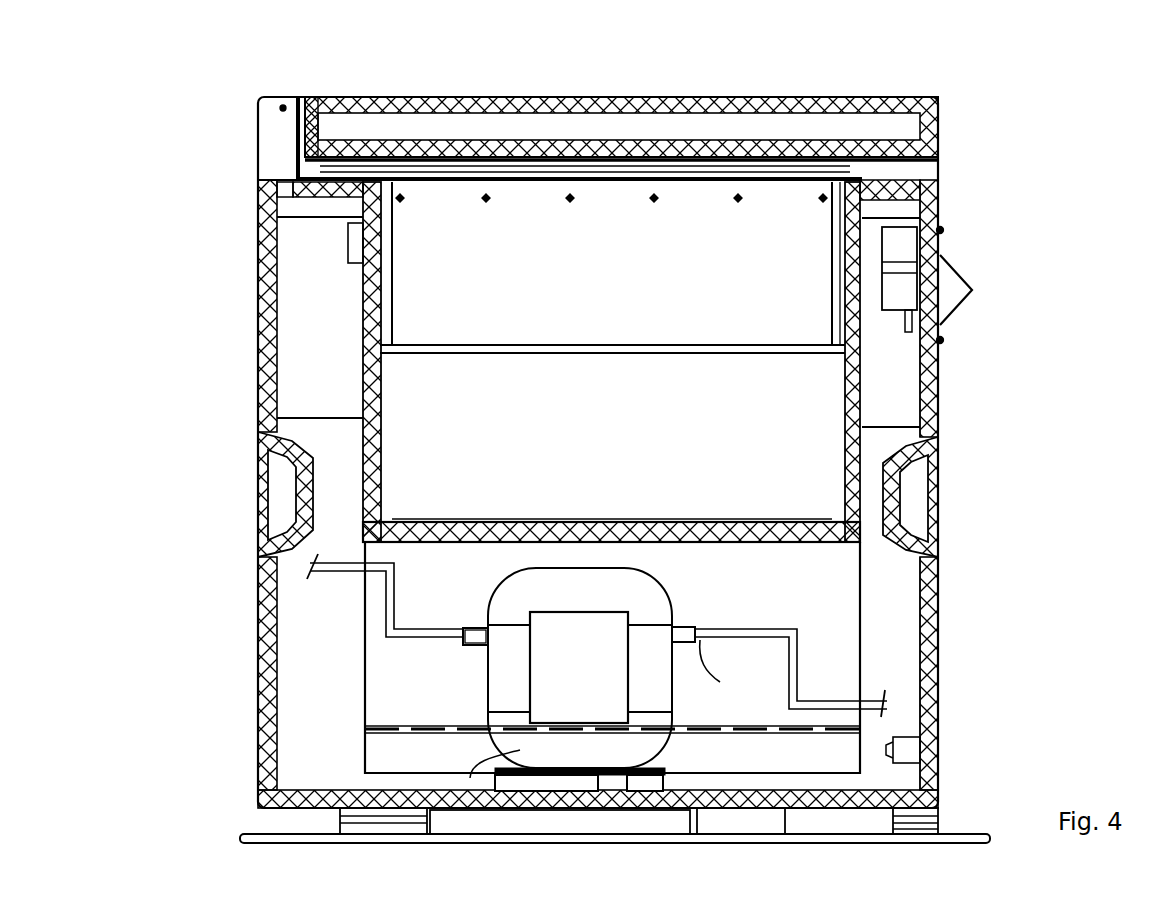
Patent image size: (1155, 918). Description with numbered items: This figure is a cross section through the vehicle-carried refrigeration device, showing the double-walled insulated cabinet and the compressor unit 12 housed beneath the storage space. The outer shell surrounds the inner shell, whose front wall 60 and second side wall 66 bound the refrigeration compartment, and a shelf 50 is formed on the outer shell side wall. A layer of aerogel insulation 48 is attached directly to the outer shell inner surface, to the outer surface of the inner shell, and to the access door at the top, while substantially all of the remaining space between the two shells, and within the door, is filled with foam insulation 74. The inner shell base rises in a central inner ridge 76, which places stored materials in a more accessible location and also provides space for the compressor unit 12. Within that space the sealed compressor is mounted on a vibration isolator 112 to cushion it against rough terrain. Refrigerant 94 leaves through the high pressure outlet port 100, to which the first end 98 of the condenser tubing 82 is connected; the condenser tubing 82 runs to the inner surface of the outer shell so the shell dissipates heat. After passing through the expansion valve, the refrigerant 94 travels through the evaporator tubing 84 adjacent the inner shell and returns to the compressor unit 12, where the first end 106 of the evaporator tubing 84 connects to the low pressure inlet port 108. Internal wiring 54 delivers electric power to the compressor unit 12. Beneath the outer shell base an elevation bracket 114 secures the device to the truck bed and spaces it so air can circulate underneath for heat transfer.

The compressor unit 12 is at (432, 713).
The layer of aerogel insulation 48 is at (768, 145).
The shelf 50 is at (484, 345).
The internal wiring 54 is at (440, 768).
The inner shell front wall 60 is at (845, 440).
The inner shell second side wall 66 is at (625, 342).
The foam insulation 74 is at (640, 128).
The inner ridge 76 is at (492, 522).
The condenser tubing 82 is at (796, 661).
The evaporator tubing 84 is at (375, 600).
The refrigerant 94 is at (888, 702).
The first end of condenser tubing 98 is at (727, 669).
The high pressure outlet port 100 is at (690, 628).
The first end of evaporator tubing 106 is at (458, 640).
The low pressure inlet port 108 is at (470, 628).
The vibration isolator 112 is at (662, 590).
The elevation bracket 114 is at (300, 846).